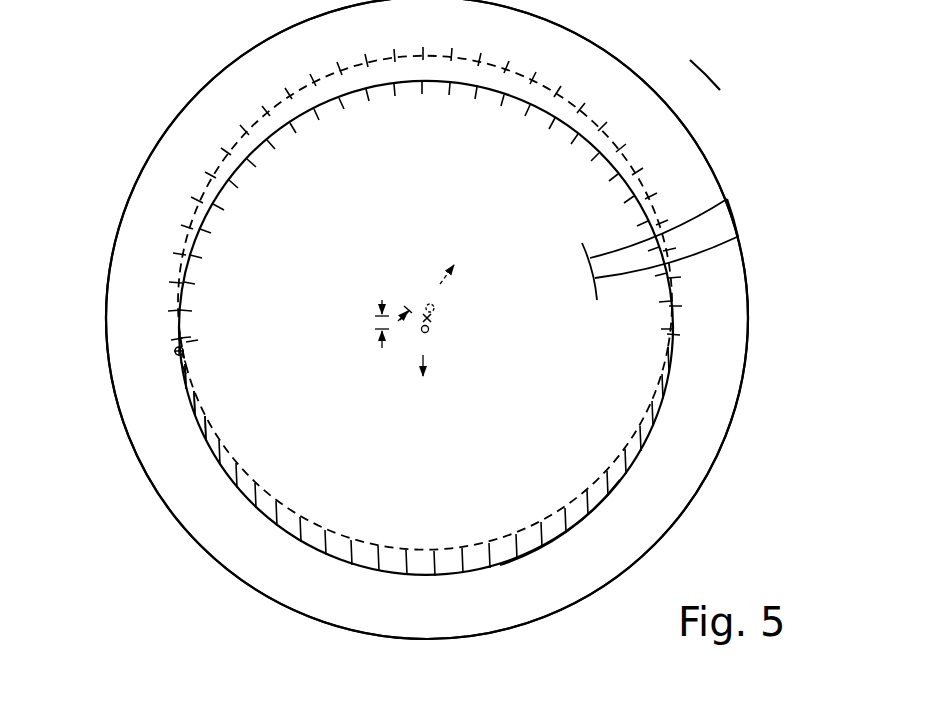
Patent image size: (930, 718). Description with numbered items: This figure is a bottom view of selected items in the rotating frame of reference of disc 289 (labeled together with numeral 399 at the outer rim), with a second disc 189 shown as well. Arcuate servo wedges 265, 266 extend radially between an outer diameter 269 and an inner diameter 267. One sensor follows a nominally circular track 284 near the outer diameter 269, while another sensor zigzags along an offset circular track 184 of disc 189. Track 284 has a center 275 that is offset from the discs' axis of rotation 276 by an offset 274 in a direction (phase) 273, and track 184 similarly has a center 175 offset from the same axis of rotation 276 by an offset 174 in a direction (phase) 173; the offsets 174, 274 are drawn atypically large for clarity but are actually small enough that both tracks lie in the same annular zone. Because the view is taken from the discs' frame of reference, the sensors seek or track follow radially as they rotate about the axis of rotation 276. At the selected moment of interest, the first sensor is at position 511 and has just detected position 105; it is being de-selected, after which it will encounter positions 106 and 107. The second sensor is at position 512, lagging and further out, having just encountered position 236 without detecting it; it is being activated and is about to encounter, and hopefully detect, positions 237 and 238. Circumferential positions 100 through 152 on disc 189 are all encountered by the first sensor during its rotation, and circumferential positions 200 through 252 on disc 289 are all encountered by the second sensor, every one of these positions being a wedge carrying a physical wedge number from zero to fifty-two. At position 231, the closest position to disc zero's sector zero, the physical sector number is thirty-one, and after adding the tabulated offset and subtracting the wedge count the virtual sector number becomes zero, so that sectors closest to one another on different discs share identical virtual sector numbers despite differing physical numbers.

The disc 289 is at (682, 51).
The outer housing wall 399 is at (454, 319).
The disc 189 is at (705, 91).
The position 231 is at (218, 213).
The nominally circular track 284 is at (331, 562).
The circumferential position 200 is at (548, 554).
The circumferential position 252 is at (520, 571).
The circumferential position 100 is at (192, 209).
The circumferential position 152 is at (212, 168).
The offset circular track 184 is at (341, 529).
The arcuate servo wedge 266 is at (709, 205).
The arcuate servo wedge 265 is at (727, 248).
The inner diameter 267 is at (603, 300).
The outer diameter 269 is at (743, 289).
The position 512 is at (173, 351).
The position 236 is at (173, 345).
The position 237 is at (174, 372).
The position 238 is at (185, 405).
The position 105 is at (193, 346).
The position 511 is at (184, 353).
The position 106 is at (201, 373).
The position 107 is at (211, 400).
The center 175 is at (440, 307).
The axis of rotation 276 is at (437, 319).
The center 275 is at (436, 334).
The direction (phase) 173 is at (468, 265).
The offset 174 is at (418, 280).
The direction (phase) 273 is at (399, 349).
The offset 274 is at (365, 346).